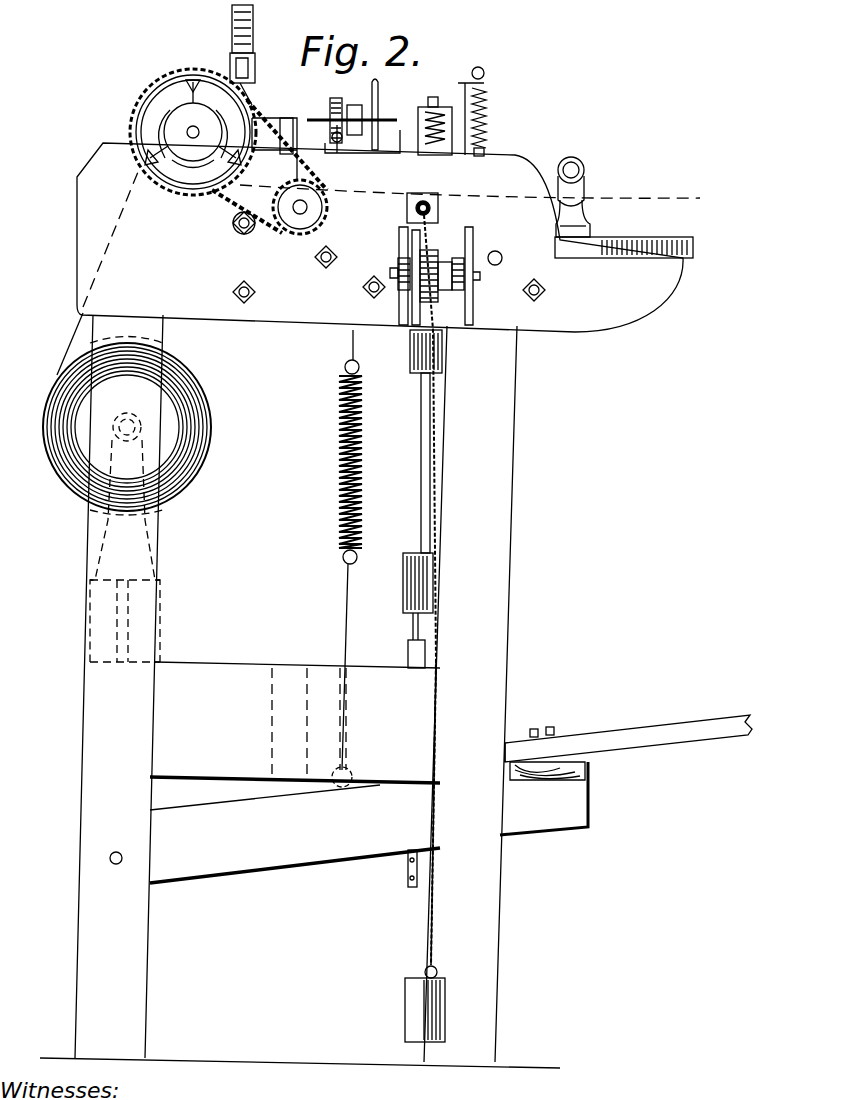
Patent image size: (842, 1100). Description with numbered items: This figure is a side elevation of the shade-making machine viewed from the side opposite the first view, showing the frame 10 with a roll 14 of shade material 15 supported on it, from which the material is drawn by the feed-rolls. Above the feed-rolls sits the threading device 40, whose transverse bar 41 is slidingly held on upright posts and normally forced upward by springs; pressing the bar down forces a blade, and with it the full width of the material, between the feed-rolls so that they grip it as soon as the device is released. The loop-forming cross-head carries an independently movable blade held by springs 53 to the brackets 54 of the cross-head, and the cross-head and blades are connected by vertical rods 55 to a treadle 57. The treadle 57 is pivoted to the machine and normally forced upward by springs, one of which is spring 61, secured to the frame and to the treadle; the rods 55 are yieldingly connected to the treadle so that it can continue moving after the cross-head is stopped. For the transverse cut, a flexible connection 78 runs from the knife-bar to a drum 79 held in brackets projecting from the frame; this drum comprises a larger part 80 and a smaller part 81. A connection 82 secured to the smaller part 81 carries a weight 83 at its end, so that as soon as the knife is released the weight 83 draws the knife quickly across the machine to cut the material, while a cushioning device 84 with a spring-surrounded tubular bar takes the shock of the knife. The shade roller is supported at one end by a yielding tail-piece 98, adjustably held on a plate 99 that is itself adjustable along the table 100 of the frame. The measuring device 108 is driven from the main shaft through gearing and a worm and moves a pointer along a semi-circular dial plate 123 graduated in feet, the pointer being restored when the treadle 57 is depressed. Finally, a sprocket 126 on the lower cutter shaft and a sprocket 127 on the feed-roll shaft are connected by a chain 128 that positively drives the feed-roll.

The frame 10 is at (518, 580).
The roll of fabric 14 is at (204, 410).
The shade material 15 is at (68, 343).
The threading device 40 is at (258, 29).
The transverse bar 41 is at (231, 70).
The springs 53 is at (486, 122).
The brackets 54 is at (484, 80).
The vertical rods 55 is at (421, 500).
The treadle 57 is at (648, 740).
The spring 61 is at (338, 462).
The flexible connection 78 is at (440, 212).
The drum 79 is at (389, 272).
The drum part 80 is at (398, 262).
The drum part 81 is at (462, 248).
The connection 82 is at (425, 907).
The weight 83 is at (412, 1010).
The cushioning device 84 is at (431, 195).
The yielding tail-piece 98 is at (584, 172).
The plate 99 is at (586, 220).
The table 100 is at (675, 246).
The measuring device 108 is at (332, 118).
The dial plate 123 is at (379, 102).
The sprocket 126 is at (296, 225).
The sprocket 127 is at (180, 192).
The chain 128 is at (235, 232).